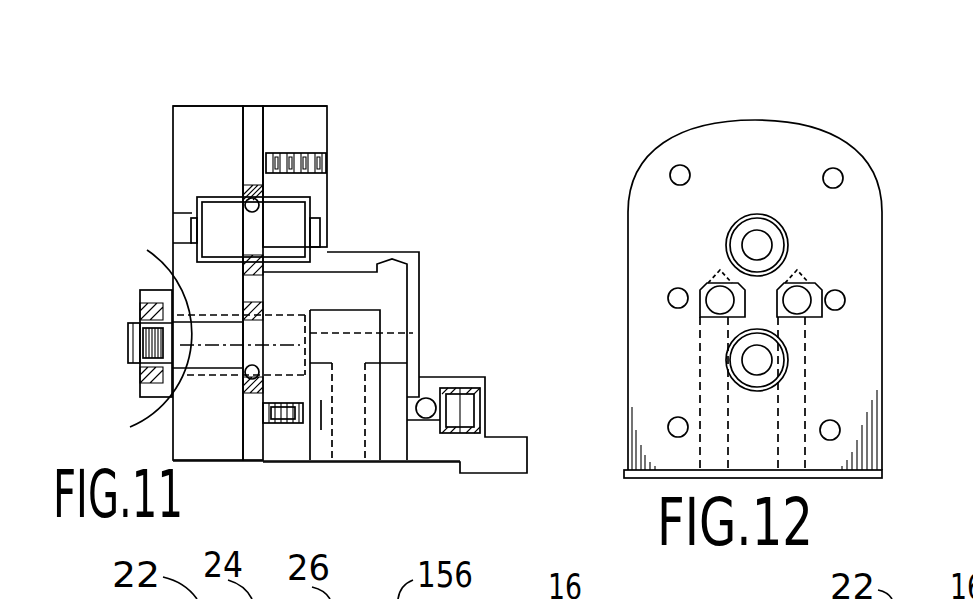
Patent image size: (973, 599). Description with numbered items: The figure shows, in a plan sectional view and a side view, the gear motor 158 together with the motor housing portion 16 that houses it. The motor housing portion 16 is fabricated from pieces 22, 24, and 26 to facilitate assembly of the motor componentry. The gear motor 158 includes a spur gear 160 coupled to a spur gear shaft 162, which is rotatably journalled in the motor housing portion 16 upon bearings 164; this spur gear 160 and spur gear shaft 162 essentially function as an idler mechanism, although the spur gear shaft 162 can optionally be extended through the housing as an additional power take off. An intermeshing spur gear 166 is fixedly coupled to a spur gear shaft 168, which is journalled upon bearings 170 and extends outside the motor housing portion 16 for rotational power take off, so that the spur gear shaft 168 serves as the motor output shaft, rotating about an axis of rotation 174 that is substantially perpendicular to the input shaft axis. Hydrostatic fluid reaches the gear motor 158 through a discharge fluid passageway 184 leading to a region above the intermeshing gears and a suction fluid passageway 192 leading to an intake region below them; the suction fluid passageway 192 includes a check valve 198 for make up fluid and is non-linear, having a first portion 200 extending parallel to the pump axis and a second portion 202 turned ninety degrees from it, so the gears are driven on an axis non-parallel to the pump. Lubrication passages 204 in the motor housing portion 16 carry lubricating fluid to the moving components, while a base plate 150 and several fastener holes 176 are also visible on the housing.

In FIG. 11, the motor housing portion 16 is at (316, 99).
In FIG. 12, the motor housing portion 16 is at (864, 150).
In FIG. 11, the piece 22 is at (190, 118).
In FIG. 11, the piece 24 is at (250, 122).
In FIG. 12, the piece 24 is at (858, 216).
In FIG. 11, the piece 26 is at (313, 127).
In FIG. 11, the base plate 150 is at (299, 458).
In FIG. 12, the base plate 150 is at (840, 478).
In FIG. 11, the gear motor 158 is at (207, 386).
In FIG. 11, the spur gear 160 is at (258, 193).
In FIG. 11, the spur gear shaft 162 is at (283, 227).
In FIG. 12, the bearings 164 is at (790, 352).
In FIG. 11, the spur gear 166 is at (253, 402).
In FIG. 11, the spur gear shaft 168 is at (190, 330).
In FIG. 11, the bearings 170 is at (321, 430).
In FIG. 12, the bearings 170 is at (790, 241).
In FIG. 11, the axis of rotation 174 is at (172, 395).
In FIG. 11, the fastener hole 176 is at (320, 162).
In FIG. 12, the fastener hole 176 is at (670, 167).
In FIG. 12, the discharge fluid passageway 184 is at (800, 298).
In FIG. 11, the suction fluid passageway 192 is at (365, 268).
In FIG. 12, the suction fluid passageway 192 is at (712, 305).
In FIG. 11, the check valve 198 is at (452, 390).
In FIG. 11, the first portion 200 is at (397, 310).
In FIG. 11, the second portion 202 is at (347, 293).
In FIG. 11, the lubrication passages 204 is at (347, 443).